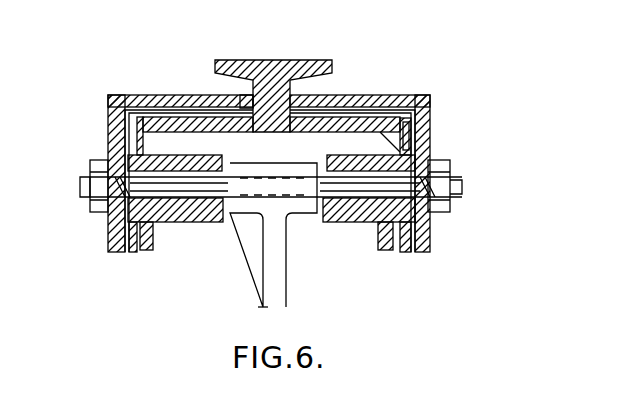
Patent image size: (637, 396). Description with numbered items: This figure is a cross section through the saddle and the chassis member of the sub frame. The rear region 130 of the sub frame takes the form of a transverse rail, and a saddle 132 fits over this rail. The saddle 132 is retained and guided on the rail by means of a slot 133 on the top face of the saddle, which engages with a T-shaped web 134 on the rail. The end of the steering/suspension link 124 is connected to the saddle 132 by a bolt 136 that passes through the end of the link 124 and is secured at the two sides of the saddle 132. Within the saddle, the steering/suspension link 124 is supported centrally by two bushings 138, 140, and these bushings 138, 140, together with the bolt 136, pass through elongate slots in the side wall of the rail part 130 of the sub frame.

The steering/suspension link 124 is at (277, 257).
The rear region 130 is at (413, 97).
The saddle 132 is at (383, 100).
The slot 133 is at (250, 100).
The T-shaped web 134 is at (272, 70).
The bolt 136 is at (448, 177).
The bushing 138 is at (360, 223).
The bushing 140 is at (183, 223).